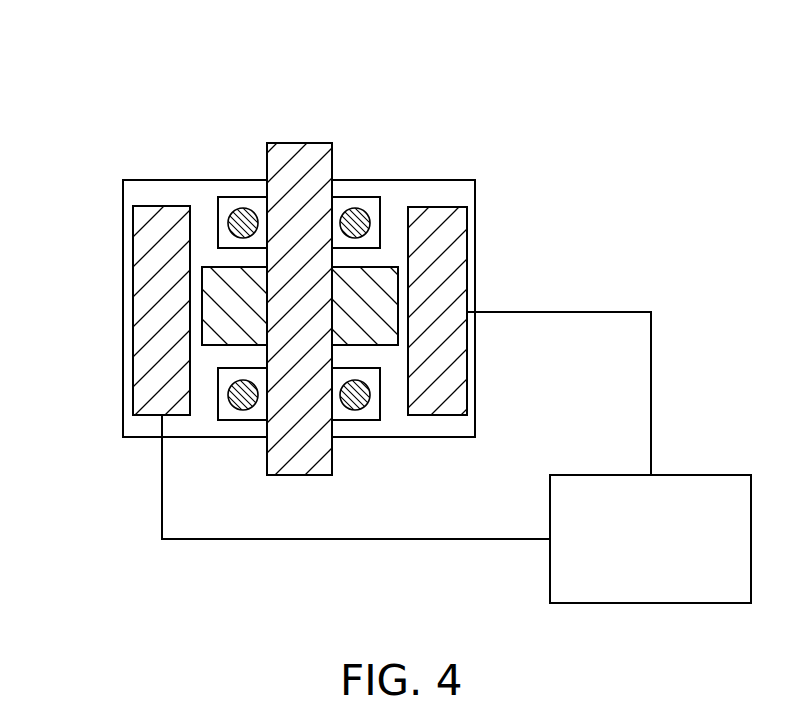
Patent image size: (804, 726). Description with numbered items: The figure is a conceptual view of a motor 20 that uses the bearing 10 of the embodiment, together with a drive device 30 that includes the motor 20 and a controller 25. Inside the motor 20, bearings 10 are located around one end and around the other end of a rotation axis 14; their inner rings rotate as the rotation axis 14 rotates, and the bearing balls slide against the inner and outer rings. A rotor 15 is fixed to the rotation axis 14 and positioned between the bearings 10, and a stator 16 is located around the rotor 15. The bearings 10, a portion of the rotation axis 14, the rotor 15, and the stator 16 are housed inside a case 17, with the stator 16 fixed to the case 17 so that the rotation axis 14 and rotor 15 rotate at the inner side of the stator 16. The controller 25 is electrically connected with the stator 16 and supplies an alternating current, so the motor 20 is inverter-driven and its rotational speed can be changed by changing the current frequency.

The bearing 10 is at (350, 195).
The rotation axis 14 is at (302, 142).
The rotor 15 is at (217, 300).
The stator 16 is at (153, 340).
The case 17 is at (476, 192).
The motor 20 is at (132, 170).
The controller 25 is at (720, 476).
The drive device 30 is at (668, 168).